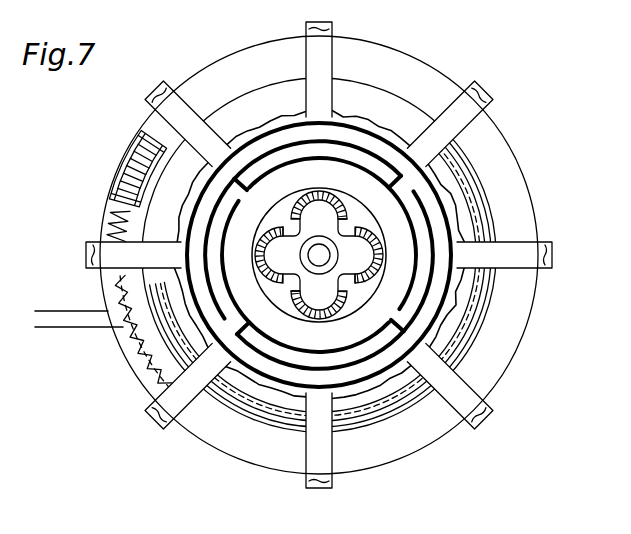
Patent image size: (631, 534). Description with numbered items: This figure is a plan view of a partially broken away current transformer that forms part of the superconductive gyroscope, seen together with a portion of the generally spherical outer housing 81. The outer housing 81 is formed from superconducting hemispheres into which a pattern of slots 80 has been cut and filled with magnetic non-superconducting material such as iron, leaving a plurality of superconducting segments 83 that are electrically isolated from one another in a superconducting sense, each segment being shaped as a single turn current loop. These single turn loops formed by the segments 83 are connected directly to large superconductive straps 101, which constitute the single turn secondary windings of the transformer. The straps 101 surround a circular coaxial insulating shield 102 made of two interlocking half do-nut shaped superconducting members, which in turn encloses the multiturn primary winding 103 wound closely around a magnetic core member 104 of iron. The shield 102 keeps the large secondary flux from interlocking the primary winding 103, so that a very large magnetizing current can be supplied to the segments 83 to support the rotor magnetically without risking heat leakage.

The slots 80 is at (378, 182).
The outer housing 81 is at (336, 180).
The superconducting segments 83 is at (319, 255).
The superconductive straps 101 is at (336, 30).
The coaxial insulating shield 102 is at (123, 150).
The primary winding 103 is at (115, 185).
The magnetic core member 104 is at (118, 168).